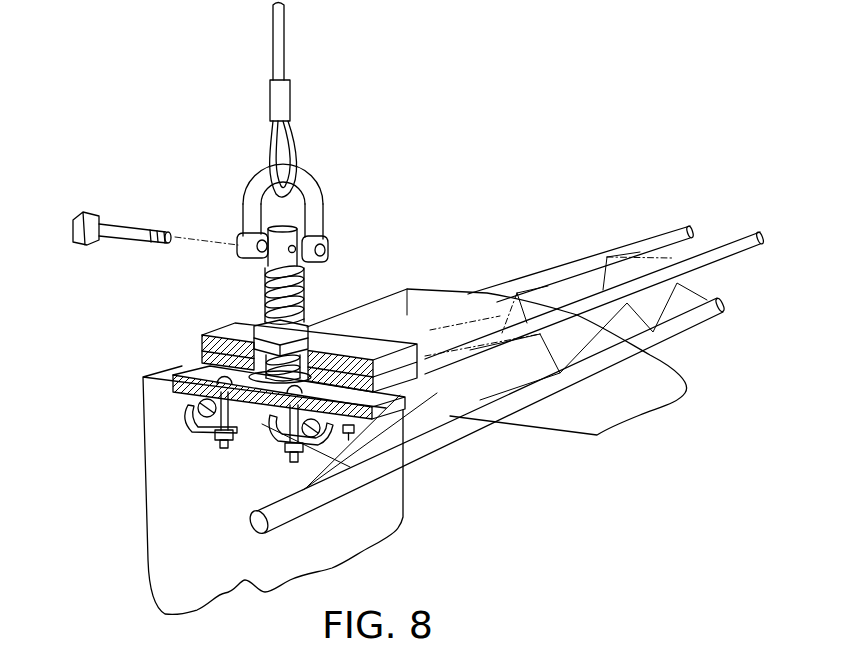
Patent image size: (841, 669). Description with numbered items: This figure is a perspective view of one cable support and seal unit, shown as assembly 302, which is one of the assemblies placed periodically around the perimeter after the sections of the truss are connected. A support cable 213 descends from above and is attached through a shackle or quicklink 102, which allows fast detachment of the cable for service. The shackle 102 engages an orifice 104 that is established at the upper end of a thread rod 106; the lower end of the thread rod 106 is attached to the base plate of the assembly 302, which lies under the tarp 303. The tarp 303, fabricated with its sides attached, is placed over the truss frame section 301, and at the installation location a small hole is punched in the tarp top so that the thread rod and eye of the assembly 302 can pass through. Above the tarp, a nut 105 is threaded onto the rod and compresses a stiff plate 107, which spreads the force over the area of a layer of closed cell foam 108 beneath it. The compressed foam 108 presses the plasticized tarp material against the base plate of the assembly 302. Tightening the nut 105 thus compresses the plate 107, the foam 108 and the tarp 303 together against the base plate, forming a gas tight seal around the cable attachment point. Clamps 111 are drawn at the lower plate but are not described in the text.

The support cable 213 is at (290, 36).
The cable support and seal assembly 302 is at (378, 186).
The shackle or quicklink 102 is at (248, 182).
The orifice 104 is at (331, 247).
The thread rod 106 is at (262, 283).
The nut 105 is at (258, 324).
The stiff plate 107 is at (212, 335).
The closed cell foam 108 is at (183, 364).
The clamp 111 is at (200, 448).
The truss frame section 301 is at (630, 243).
The tarp 303 is at (638, 398).